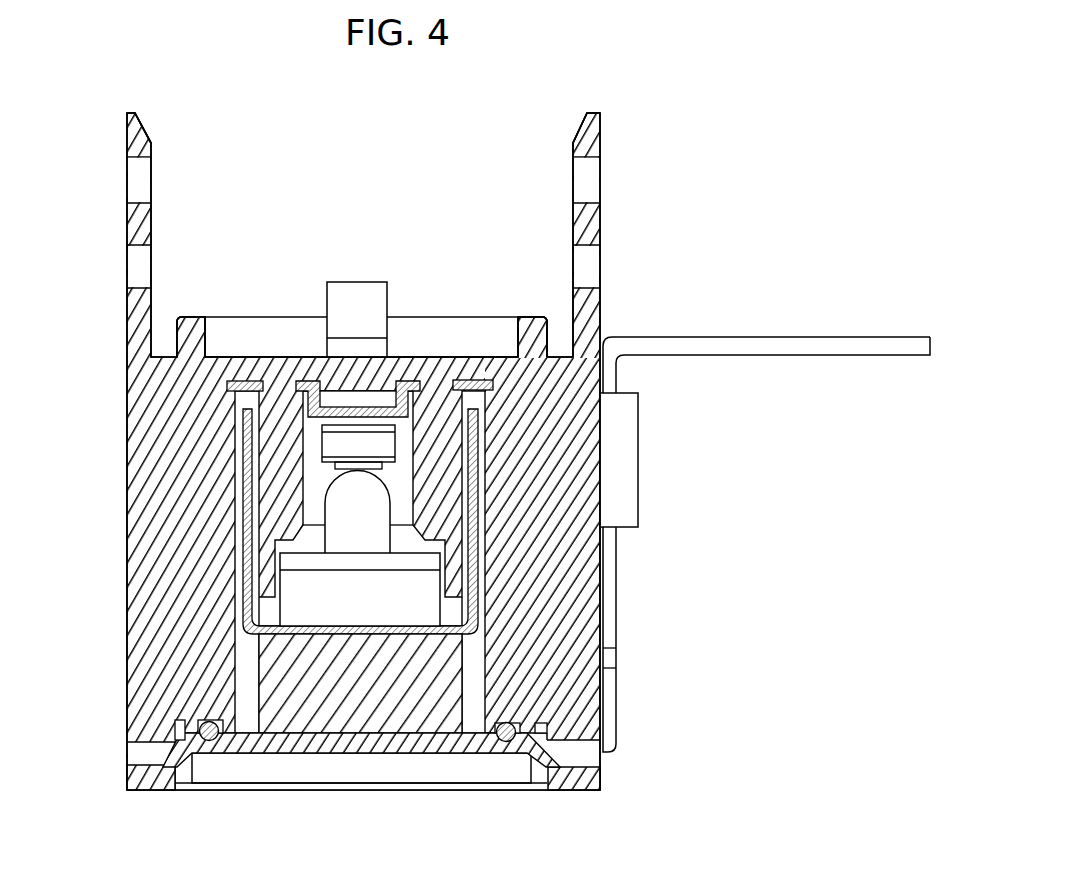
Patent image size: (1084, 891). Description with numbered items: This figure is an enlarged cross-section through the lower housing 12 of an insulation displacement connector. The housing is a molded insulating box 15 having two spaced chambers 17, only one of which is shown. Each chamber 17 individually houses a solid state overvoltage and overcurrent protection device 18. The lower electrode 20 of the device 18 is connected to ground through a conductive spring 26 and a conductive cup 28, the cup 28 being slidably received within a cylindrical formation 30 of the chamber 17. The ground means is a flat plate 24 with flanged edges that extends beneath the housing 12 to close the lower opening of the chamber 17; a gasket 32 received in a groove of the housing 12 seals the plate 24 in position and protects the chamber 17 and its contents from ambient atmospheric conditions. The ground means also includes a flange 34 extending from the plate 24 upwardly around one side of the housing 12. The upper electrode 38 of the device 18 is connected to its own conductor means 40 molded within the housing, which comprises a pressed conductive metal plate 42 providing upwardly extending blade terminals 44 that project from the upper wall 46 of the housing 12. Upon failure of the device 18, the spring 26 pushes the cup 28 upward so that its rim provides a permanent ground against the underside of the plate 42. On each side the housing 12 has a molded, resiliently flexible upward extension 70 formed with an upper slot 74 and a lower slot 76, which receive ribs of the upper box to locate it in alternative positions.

The lower housing 12 is at (123, 652).
The molded insulating box 15 is at (583, 638).
The chamber 17 is at (468, 722).
The overvoltage and overcurrent protection device 18 is at (387, 445).
The lower electrode 20 is at (337, 470).
The flat plate 24 is at (414, 754).
The conductive spring 26 is at (305, 718).
The conductive cup 28 is at (243, 576).
The cylindrical formation 30 is at (582, 366).
The gasket 32 is at (525, 722).
The flange 34 is at (620, 597).
The upper electrode 38 is at (380, 426).
The conductor means 40 is at (302, 358).
The pressed conductive metal plate 42 is at (477, 403).
The blade terminal 44 is at (338, 290).
The upper wall 46 is at (226, 380).
The upward extension 70 is at (127, 122).
The upper slot 74 is at (600, 183).
The lower slot 76 is at (600, 265).